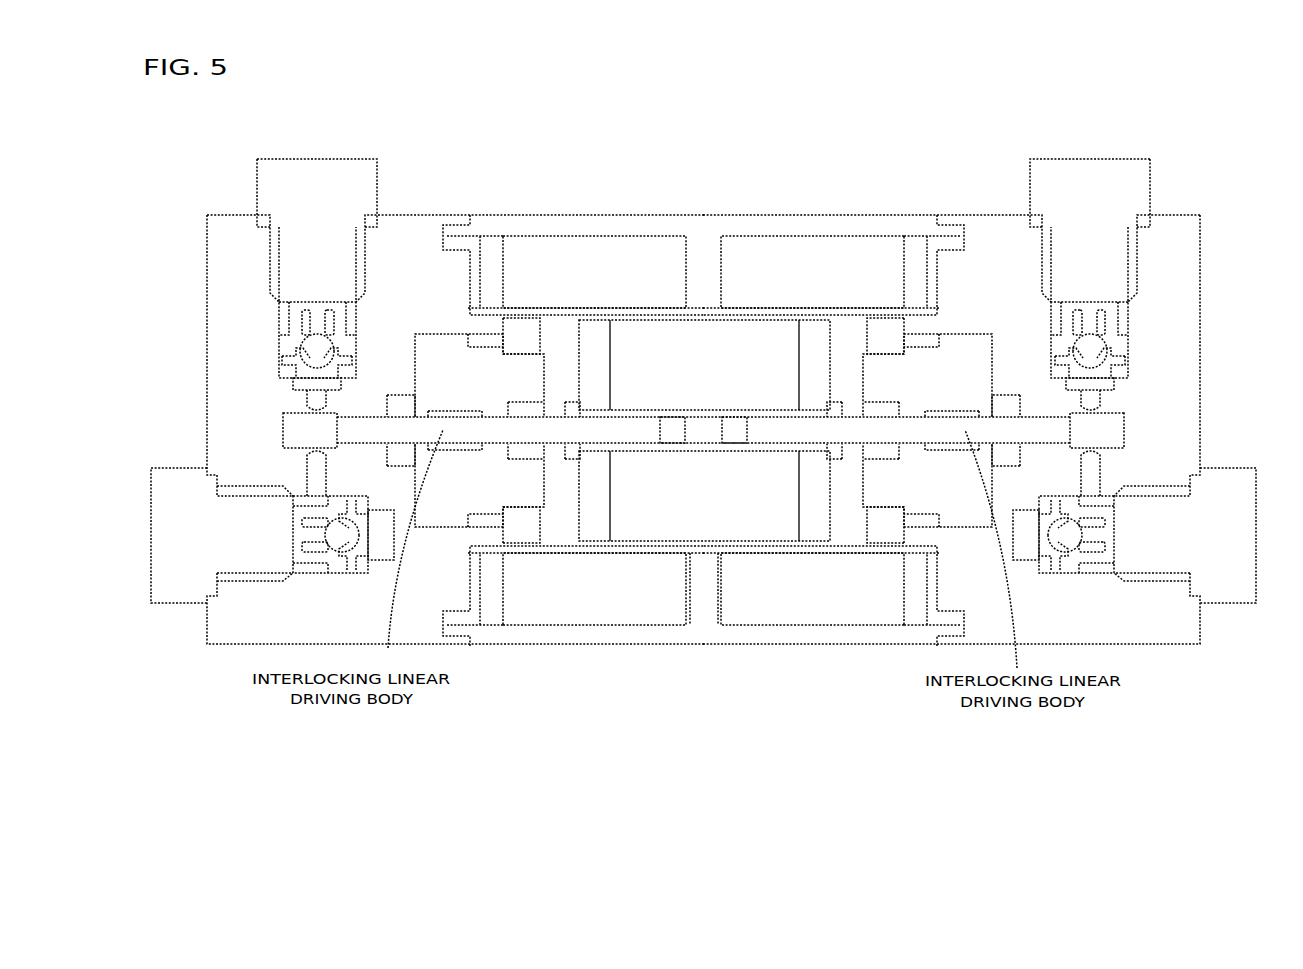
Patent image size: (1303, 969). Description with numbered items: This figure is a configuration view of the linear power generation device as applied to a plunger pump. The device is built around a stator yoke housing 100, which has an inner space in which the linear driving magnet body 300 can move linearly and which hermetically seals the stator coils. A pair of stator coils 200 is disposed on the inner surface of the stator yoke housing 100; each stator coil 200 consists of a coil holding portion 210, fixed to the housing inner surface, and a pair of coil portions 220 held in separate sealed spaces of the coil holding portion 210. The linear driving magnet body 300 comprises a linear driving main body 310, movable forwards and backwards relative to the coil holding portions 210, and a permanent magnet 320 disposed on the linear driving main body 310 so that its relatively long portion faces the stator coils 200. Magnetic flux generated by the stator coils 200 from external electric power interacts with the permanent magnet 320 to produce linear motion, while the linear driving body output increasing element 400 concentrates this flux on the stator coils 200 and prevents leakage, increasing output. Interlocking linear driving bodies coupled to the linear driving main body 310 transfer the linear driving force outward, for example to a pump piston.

The stator yoke housing 100 is at (627, 214).
The stator coil 200 is at (590, 458).
The coil holding portion 210 is at (492, 267).
The coil portion 220 is at (578, 267).
The linear driving magnet body 300 is at (604, 473).
The linear driving main body 310 is at (596, 516).
The permanent magnet 320 is at (716, 355).
The linear driving body output increasing element 400 is at (520, 335).